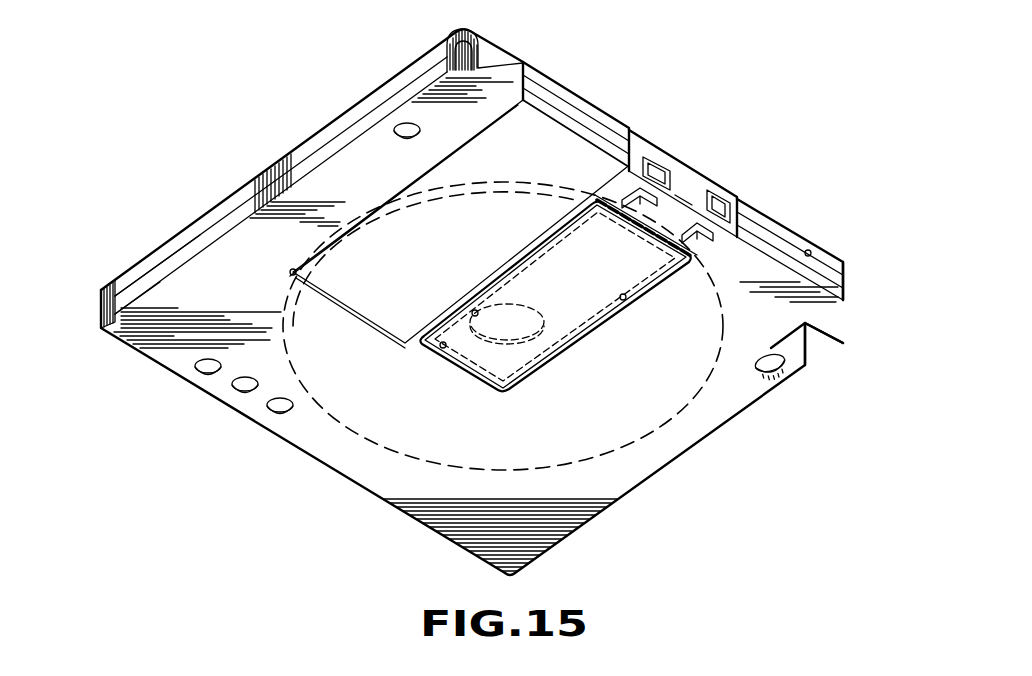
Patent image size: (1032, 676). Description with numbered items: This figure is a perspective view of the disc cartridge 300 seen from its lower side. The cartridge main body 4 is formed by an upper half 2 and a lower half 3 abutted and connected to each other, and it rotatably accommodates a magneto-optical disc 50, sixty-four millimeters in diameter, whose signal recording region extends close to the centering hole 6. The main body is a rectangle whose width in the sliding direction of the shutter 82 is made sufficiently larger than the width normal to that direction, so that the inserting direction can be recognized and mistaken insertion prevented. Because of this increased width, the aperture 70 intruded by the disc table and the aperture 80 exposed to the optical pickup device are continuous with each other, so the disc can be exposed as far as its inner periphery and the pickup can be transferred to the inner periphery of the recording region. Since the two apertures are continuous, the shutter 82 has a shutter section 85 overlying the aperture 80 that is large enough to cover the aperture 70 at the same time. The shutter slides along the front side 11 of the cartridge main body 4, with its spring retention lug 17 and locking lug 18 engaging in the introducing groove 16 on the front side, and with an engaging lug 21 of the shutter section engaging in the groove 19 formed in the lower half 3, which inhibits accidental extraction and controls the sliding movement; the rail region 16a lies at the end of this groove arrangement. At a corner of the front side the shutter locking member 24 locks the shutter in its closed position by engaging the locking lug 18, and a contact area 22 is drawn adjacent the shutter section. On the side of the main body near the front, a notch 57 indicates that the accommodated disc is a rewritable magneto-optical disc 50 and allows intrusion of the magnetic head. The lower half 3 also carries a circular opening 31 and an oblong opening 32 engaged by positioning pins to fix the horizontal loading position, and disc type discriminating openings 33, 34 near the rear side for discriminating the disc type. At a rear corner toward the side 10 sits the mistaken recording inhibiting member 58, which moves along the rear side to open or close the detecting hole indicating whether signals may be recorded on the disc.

The disc cartridge 300 is at (117, 341).
The side 10 is at (337, 118).
The upper half 2 is at (130, 270).
The lower half 3 is at (152, 268).
The cartridge main body 4 is at (150, 193).
The front side 11 is at (514, 62).
The groove 19 is at (543, 130).
The shutter 82 is at (694, 182).
The spring retention lug 17 is at (660, 157).
The locking lug 18 is at (720, 197).
The introducing groove 16 is at (810, 250).
The shutter locking member 24 is at (762, 211).
The rail end 16a is at (840, 282).
The notch 57 is at (795, 347).
The opening 32 is at (777, 370).
The magneto-optical disc 50 is at (330, 462).
The aperture 70 is at (441, 348).
The shutter section 85 is at (560, 360).
The contact strip 22 is at (687, 260).
The engaging lug 21 is at (640, 212).
The aperture 80 is at (625, 305).
The centering hole 6 is at (473, 310).
The opening 31 is at (403, 122).
The mistaken recording inhibiting member 58 is at (200, 377).
The disc type discriminating opening 33 is at (234, 392).
The disc type discriminating opening 34 is at (271, 423).